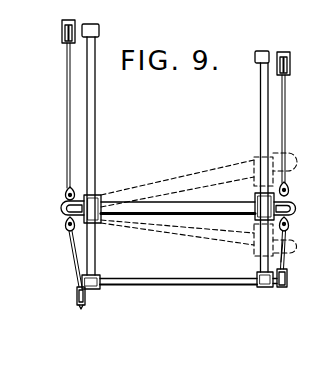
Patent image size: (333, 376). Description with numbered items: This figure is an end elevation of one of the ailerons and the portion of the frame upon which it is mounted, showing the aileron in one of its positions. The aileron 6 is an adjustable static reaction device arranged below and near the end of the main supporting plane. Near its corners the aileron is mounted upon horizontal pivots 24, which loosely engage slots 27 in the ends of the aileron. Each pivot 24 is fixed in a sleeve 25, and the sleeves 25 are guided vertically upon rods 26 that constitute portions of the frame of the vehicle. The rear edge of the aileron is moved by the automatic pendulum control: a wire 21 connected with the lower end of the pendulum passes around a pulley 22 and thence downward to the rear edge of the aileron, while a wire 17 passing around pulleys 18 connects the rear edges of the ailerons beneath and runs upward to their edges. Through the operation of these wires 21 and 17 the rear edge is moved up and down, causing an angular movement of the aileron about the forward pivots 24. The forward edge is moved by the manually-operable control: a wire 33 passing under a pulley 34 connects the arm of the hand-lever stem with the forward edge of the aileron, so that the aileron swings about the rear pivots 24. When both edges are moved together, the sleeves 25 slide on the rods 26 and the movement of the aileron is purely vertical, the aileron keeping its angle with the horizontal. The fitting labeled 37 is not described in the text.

The aileron 6 is at (142, 207).
The wire 17 is at (285, 264).
The pulley 18 is at (287, 284).
The wire 21 is at (286, 122).
The pulley 22 is at (291, 66).
The horizontal pivot 24 is at (256, 204).
The sleeve 25 is at (102, 199).
The rod 26 is at (96, 141).
The slot 27 is at (64, 212).
The wire 33 is at (74, 266).
The pulley 34 is at (77, 294).
The upper left rope fitting 37 is at (63, 41).